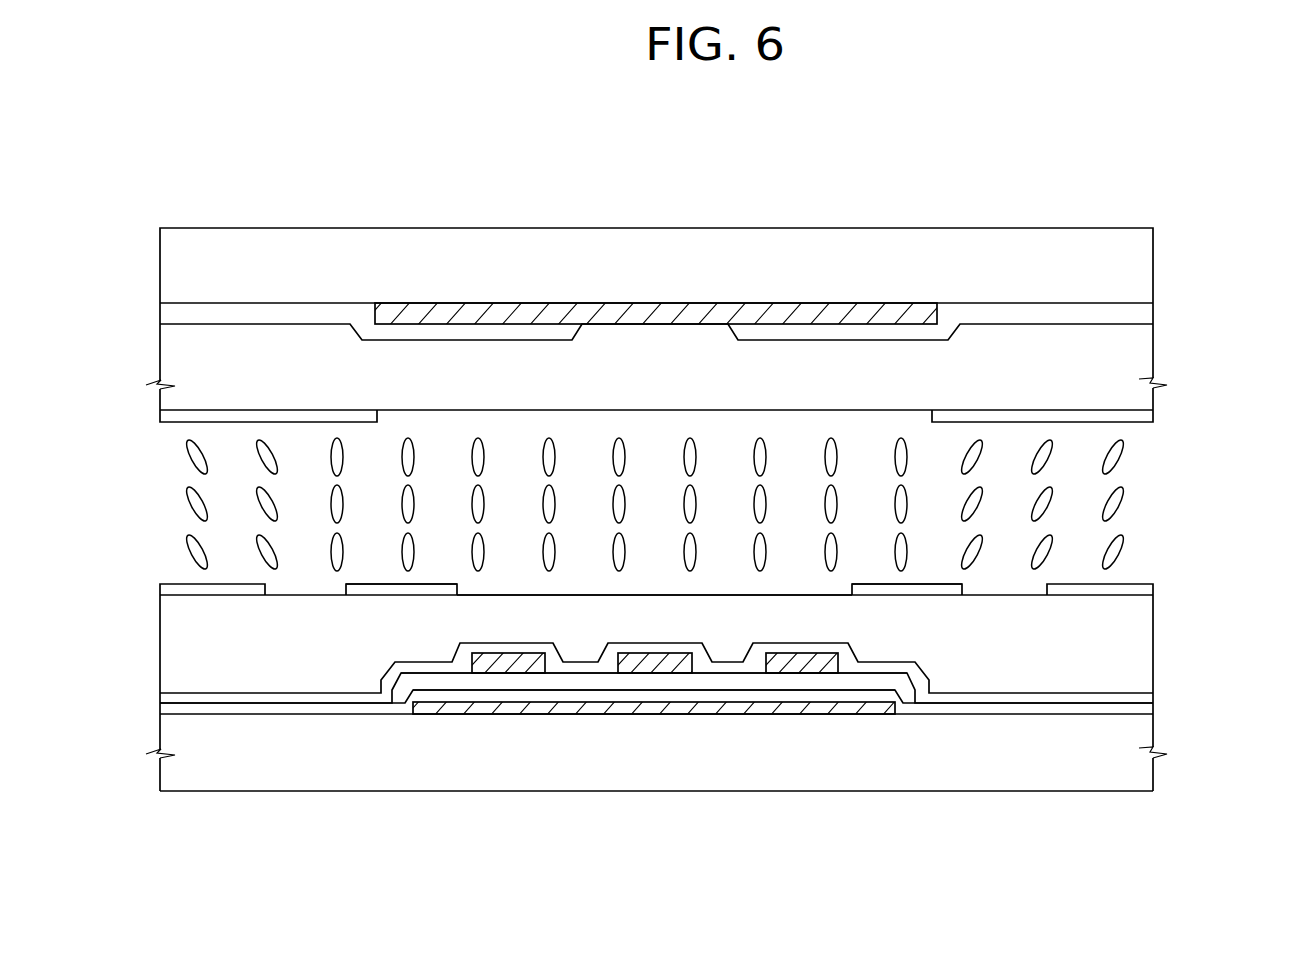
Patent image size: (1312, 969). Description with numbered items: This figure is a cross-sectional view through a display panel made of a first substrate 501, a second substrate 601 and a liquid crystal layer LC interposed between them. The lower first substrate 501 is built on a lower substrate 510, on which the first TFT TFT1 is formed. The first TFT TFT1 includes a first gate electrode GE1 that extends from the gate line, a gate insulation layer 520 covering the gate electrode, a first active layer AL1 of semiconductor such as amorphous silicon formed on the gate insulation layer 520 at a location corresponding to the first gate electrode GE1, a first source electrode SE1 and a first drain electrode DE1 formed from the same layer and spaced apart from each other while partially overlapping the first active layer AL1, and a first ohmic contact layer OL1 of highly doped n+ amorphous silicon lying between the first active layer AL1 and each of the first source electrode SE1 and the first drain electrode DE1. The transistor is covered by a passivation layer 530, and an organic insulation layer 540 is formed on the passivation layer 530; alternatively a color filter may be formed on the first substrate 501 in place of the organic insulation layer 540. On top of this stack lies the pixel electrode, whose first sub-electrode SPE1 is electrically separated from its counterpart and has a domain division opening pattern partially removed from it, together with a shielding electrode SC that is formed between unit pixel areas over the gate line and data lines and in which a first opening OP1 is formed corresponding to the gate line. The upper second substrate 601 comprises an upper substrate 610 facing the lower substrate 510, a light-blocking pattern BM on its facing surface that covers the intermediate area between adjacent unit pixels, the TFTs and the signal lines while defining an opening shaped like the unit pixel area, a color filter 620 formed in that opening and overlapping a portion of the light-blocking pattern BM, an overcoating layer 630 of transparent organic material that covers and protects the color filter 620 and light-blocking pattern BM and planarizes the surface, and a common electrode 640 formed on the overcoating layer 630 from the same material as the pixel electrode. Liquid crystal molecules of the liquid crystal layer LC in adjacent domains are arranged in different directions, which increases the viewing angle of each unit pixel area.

The second substrate 601 is at (1240, 257).
The upper substrate 610 is at (1147, 265).
The color filter 620 is at (1147, 313).
The light-blocking pattern BM is at (654, 312).
The overcoating layer 630 is at (1147, 360).
The common electrode 640 is at (1147, 412).
The liquid crystal layer LC is at (1162, 438).
The first substrate 501 is at (1250, 582).
The lower substrate 510 is at (1147, 762).
The gate insulation layer 520 is at (1147, 707).
The passivation layer 530 is at (1147, 693).
The organic insulation layer 540 is at (1147, 653).
The first sub-electrode SPE1 is at (161, 587).
The shielding electrode SC is at (370, 590).
The first opening OP1 is at (517, 588).
The first TFT TFT1 is at (490, 855).
The first gate electrode GE1 is at (733, 706).
The first active layer AL1 is at (580, 680).
The first source electrode SE1 is at (507, 663).
The first drain electrode DE1 is at (655, 660).
The first ohmic contact layer OL1 is at (807, 668).